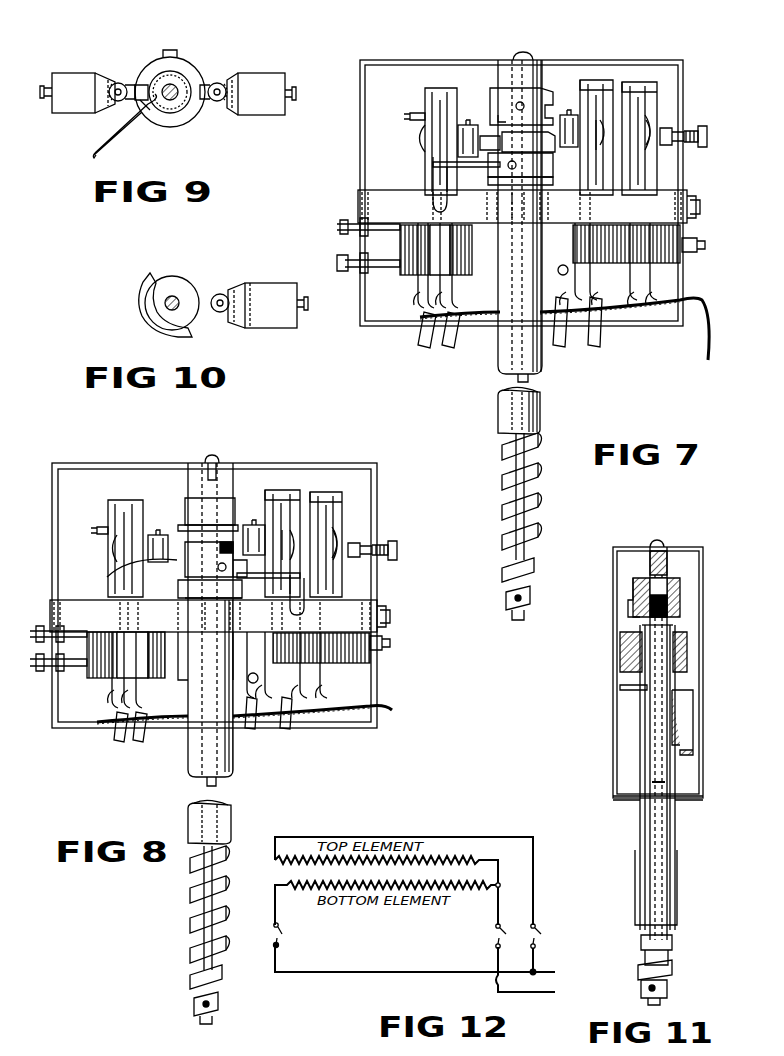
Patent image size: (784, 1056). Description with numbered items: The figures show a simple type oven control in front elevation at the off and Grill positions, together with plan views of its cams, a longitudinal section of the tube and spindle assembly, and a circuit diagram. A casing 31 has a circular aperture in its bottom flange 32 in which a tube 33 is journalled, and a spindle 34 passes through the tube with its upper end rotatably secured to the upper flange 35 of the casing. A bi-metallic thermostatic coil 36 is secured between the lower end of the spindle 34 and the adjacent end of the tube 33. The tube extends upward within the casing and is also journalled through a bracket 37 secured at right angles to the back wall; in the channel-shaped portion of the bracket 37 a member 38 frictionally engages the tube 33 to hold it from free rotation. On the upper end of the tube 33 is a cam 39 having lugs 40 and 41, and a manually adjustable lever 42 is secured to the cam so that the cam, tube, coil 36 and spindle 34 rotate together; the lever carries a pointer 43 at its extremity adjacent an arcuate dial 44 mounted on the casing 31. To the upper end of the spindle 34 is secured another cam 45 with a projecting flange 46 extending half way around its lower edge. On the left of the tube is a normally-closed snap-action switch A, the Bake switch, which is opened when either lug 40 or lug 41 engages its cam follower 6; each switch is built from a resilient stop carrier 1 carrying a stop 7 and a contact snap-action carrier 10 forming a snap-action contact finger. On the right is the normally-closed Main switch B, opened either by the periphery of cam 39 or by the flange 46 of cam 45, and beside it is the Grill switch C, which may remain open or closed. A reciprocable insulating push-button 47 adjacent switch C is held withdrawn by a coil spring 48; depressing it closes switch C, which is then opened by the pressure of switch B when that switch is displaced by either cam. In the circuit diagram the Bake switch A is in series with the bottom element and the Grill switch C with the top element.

In FIG. 7, the resilient stop carrier 1 is at (626, 155).
In FIG. 8, the resilient stop carrier 1 is at (322, 596).
In FIG. 9, the cam follower 6 is at (116, 82).
In FIG. 7, the cam follower 6 is at (518, 133).
In FIG. 8, the cam follower 6 is at (157, 533).
In FIG. 7, the stop 7 is at (660, 92).
In FIG. 8, the stop 7 is at (345, 502).
In FIG. 7, the contact snap-action carrier 10 is at (650, 130).
In FIG. 8, the contact snap-action carrier 10 is at (337, 545).
In FIG. 7, the casing 31 is at (378, 98).
In FIG. 8, the casing 31 is at (70, 518).
In FIG. 11, the casing 31 is at (703, 660).
In FIG. 7, the bottom flange 32 is at (634, 330).
In FIG. 8, the bottom flange 32 is at (282, 732).
In FIG. 11, the bottom flange 32 is at (620, 800).
In FIG. 9, the tube 33 is at (188, 108).
In FIG. 7, the tube 33 is at (503, 343).
In FIG. 8, the tube 33 is at (240, 752).
In FIG. 11, the tube 33 is at (678, 860).
In FIG. 9, the spindle 34 is at (172, 100).
In FIG. 10, the spindle 34 is at (176, 300).
In FIG. 7, the spindle 34 is at (528, 378).
In FIG. 8, the spindle 34 is at (207, 781).
In FIG. 11, the spindle 34 is at (662, 785).
In FIG. 7, the upper flange 35 is at (455, 62).
In FIG. 8, the upper flange 35 is at (284, 472).
In FIG. 11, the upper flange 35 is at (672, 548).
In FIG. 7, the bi-metallic thermostatic coil 36 is at (538, 455).
In FIG. 8, the bi-metallic thermostatic coil 36 is at (226, 870).
In FIG. 11, the bi-metallic thermostatic coil 36 is at (672, 945).
In FIG. 7, the bracket 37 is at (488, 181).
In FIG. 8, the bracket 37 is at (190, 596).
In FIG. 11, the bracket 37 is at (624, 690).
In FIG. 11, the friction member 38 is at (694, 706).
In FIG. 9, the cam 39 is at (192, 70).
In FIG. 7, the cam 39 is at (548, 165).
In FIG. 8, the cam 39 is at (188, 553).
In FIG. 11, the cam 39 is at (690, 635).
In FIG. 9, the lug 40 is at (138, 82).
In FIG. 7, the lug 40 is at (484, 136).
In FIG. 8, the lug 40 is at (228, 542).
In FIG. 11, the lug 40 is at (620, 648).
In FIG. 9, the lug 41 is at (173, 50).
In FIG. 8, the lug 41 is at (110, 576).
In FIG. 9, the manually adjustable lever 42 is at (115, 150).
In FIG. 7, the manually adjustable lever 42 is at (433, 164).
In FIG. 8, the manually adjustable lever 42 is at (258, 578).
In FIG. 7, the pointer 43 is at (432, 182).
In FIG. 8, the pointer 43 is at (306, 590).
In FIG. 7, the arcuate dial 44 is at (665, 203).
In FIG. 8, the arcuate dial 44 is at (66, 604).
In FIG. 10, the cam 45 is at (178, 280).
In FIG. 7, the cam 45 is at (503, 88).
In FIG. 8, the cam 45 is at (228, 498).
In FIG. 11, the cam 45 is at (682, 592).
In FIG. 10, the projecting flange 46 is at (146, 280).
In FIG. 7, the projecting flange 46 is at (490, 115).
In FIG. 8, the projecting flange 46 is at (180, 545).
In FIG. 11, the projecting flange 46 is at (630, 612).
In FIG. 7, the push-button 47 is at (704, 147).
In FIG. 8, the push-button 47 is at (398, 546).
In FIG. 7, the coil spring 48 is at (685, 130).
In FIG. 8, the coil spring 48 is at (372, 556).
In FIG. 9, the snap-action switch A is at (82, 68).
In FIG. 7, the snap-action switch A is at (436, 88).
In FIG. 8, the snap-action switch A is at (117, 516).
In FIG. 12, the snap-action switch A is at (292, 930).
In FIG. 9, the snap-action switch B is at (276, 68).
In FIG. 10, the snap-action switch B is at (275, 283).
In FIG. 7, the snap-action switch B is at (598, 80).
In FIG. 8, the snap-action switch B is at (278, 490).
In FIG. 12, the snap-action switch B is at (485, 930).
In FIG. 7, the switch C is at (648, 82).
In FIG. 8, the switch C is at (330, 492).
In FIG. 12, the switch C is at (550, 943).